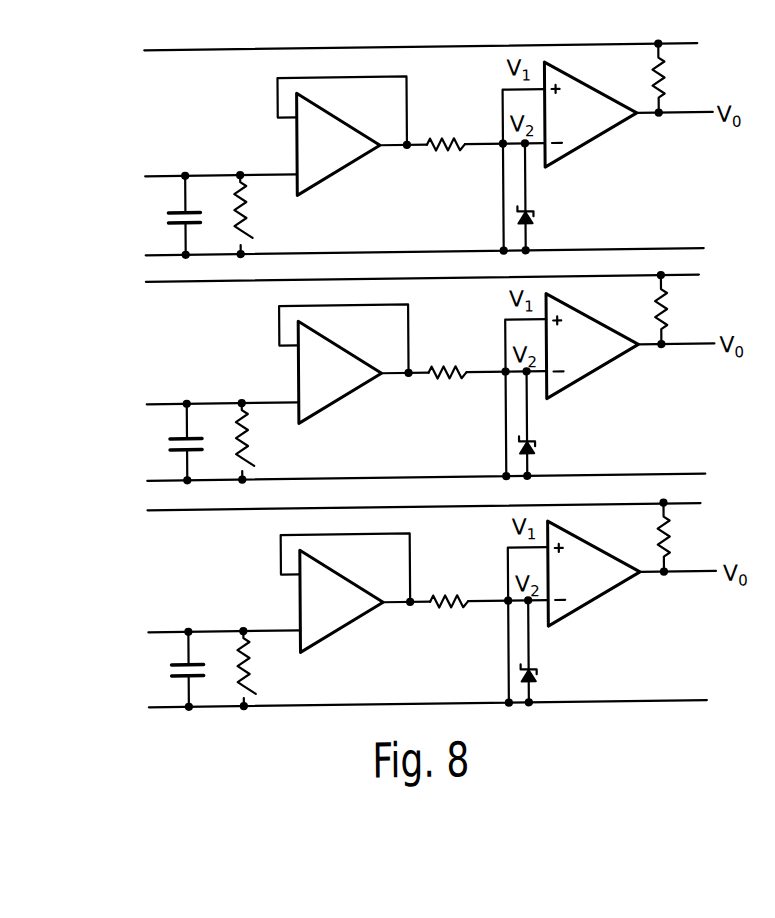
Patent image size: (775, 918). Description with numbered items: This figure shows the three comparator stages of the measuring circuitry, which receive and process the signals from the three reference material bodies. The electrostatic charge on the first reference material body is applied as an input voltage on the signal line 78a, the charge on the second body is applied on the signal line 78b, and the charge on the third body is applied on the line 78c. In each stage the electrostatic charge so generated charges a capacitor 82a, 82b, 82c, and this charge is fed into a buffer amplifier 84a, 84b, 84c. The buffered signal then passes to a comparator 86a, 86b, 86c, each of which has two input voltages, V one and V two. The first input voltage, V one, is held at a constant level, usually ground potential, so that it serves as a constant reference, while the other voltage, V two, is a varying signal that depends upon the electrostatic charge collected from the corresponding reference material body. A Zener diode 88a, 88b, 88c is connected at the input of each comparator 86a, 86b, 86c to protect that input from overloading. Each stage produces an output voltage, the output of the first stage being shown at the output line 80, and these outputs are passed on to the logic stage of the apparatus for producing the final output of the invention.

The signal line 78a is at (163, 173).
The signal line 78b is at (207, 378).
The signal line 78c is at (208, 604).
The output line 80 is at (690, 114).
The capacitor 82a is at (168, 222).
The capacitor 82b is at (161, 444).
The capacitor 82c is at (153, 671).
The buffer amplifier 84a is at (343, 155).
The buffer amplifier 84b is at (354, 373).
The buffer amplifier 84c is at (356, 592).
The comparator 86a is at (597, 120).
The comparator 86b is at (621, 348).
The comparator 86c is at (624, 573).
The Zener diode 88a is at (532, 214).
The Zener diode 88b is at (572, 424).
The Zener diode 88c is at (575, 652).